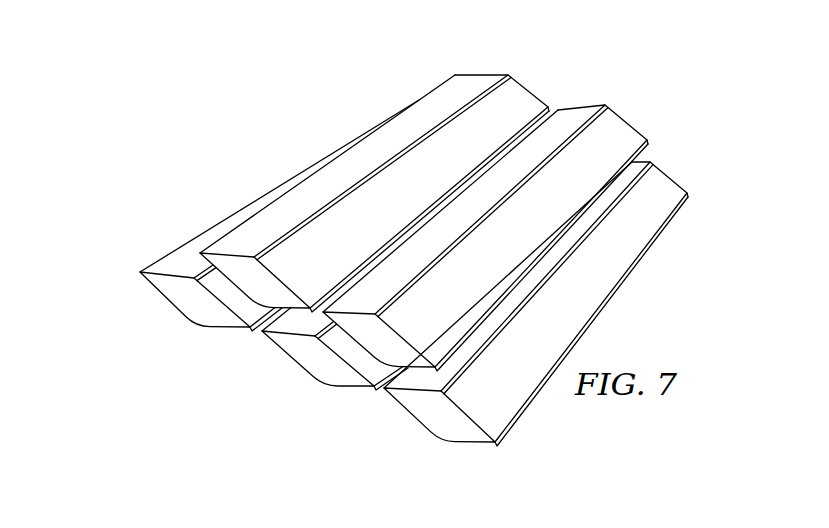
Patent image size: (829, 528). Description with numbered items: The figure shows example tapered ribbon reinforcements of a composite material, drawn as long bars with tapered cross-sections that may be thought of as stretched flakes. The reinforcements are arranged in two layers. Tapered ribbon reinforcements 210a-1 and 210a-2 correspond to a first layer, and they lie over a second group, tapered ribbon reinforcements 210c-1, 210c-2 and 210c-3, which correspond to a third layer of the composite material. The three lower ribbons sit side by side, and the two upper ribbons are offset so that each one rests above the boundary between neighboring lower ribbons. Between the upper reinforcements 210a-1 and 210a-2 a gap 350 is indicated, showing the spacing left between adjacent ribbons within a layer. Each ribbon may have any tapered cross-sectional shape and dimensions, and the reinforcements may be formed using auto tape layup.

The tapered ribbon reinforcement 210a-1 is at (432, 103).
The tapered ribbon reinforcement 210a-2 is at (618, 128).
The tapered ribbon reinforcement 210c-1 is at (170, 306).
The tapered ribbon reinforcement 210c-2 is at (293, 365).
The tapered ribbon reinforcement 210c-3 is at (415, 422).
The gap 350 is at (566, 97).